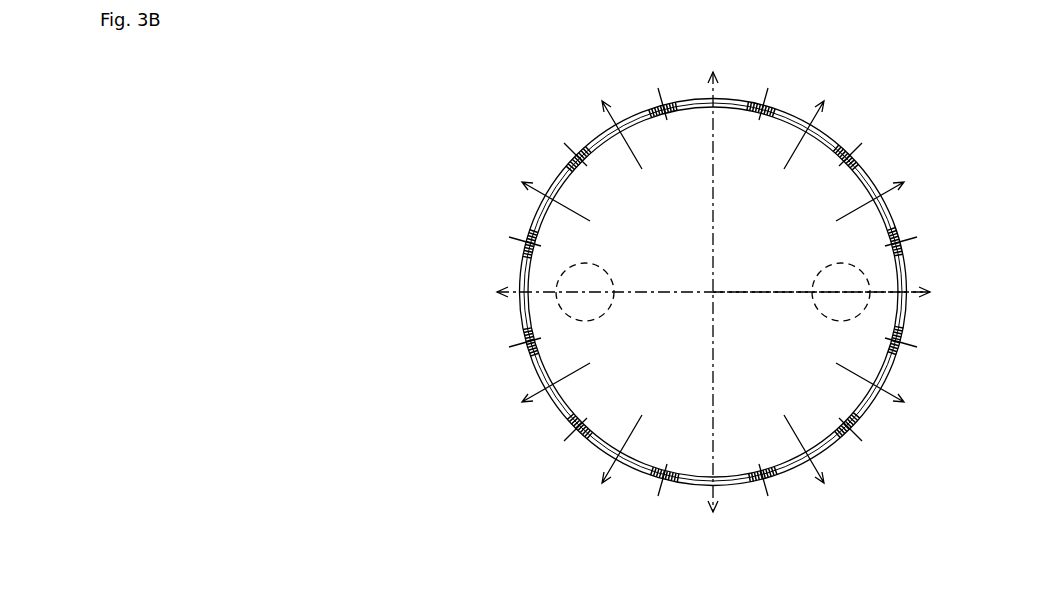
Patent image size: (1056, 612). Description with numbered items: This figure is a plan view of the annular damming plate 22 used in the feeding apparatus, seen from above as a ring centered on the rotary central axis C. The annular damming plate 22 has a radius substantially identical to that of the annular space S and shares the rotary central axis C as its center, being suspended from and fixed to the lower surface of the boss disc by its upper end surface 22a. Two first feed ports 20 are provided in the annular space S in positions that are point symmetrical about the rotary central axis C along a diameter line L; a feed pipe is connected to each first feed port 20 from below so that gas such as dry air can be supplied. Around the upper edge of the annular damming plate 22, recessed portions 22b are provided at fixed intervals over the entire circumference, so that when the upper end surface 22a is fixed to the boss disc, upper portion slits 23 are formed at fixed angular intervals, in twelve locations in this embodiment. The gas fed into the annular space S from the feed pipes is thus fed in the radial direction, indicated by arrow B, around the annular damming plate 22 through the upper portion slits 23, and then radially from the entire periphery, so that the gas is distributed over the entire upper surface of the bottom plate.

The first feed port 20 is at (606, 266).
The annular damming plate 22 is at (584, 118).
The upper end surface 22a is at (527, 247).
The recessed portions 22b is at (528, 310).
The upper portion slits 23 is at (496, 281).
The direction of arrow B is at (702, 274).
The rotary central axis C is at (713, 292).
The diameter line L is at (733, 292).
The annular space S is at (676, 372).